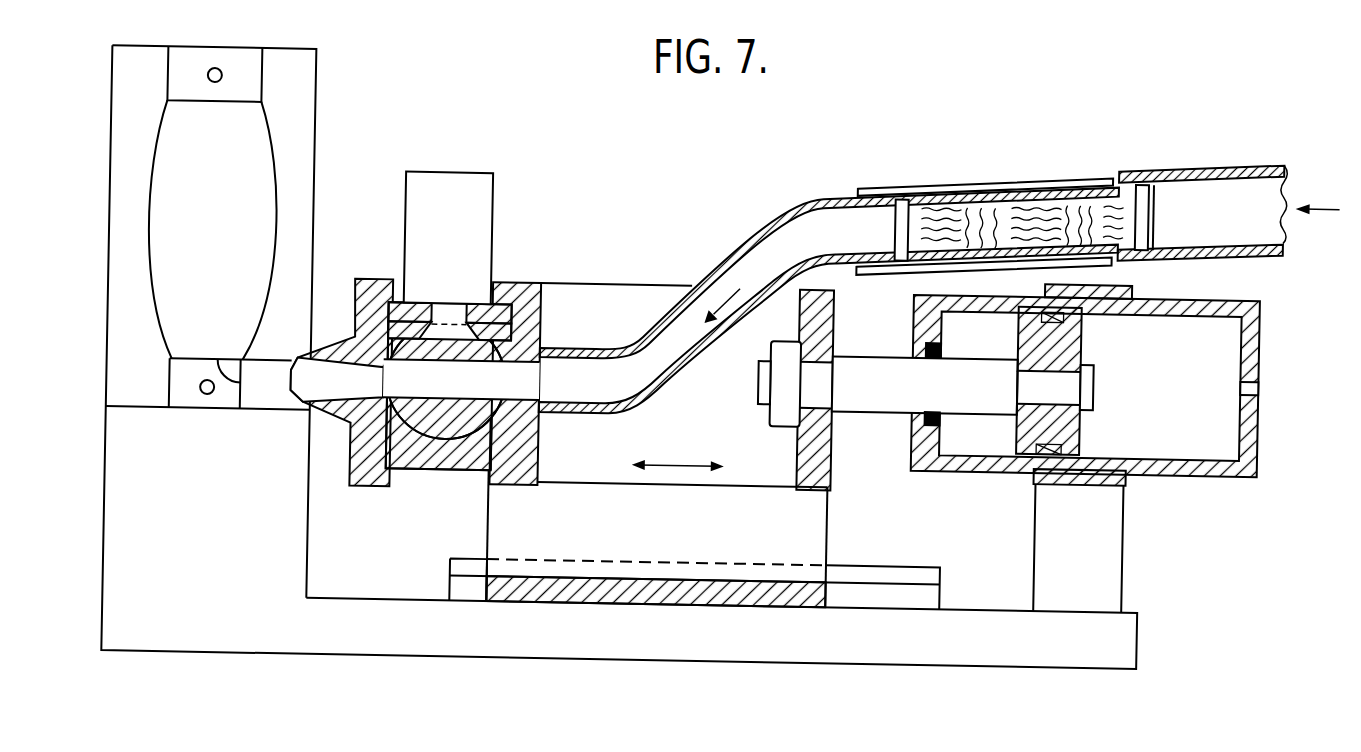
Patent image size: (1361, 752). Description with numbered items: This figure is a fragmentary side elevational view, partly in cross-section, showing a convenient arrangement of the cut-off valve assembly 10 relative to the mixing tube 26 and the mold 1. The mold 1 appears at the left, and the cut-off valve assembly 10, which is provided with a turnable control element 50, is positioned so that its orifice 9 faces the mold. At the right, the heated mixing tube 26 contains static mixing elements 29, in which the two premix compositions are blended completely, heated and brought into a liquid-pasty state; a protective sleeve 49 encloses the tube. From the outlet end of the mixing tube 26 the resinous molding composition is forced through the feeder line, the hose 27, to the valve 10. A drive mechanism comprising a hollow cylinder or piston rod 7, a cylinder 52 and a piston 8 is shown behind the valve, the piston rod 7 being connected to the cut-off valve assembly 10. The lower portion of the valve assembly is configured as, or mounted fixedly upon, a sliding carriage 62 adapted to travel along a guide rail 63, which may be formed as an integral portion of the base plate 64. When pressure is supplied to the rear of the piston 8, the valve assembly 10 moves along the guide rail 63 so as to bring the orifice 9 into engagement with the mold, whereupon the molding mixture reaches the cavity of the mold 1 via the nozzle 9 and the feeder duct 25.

The mold 1 is at (294, 200).
The feeder duct 25 is at (268, 383).
The orifice 9 is at (336, 412).
The cut-off valve assembly 10 is at (650, 288).
The turnable control element 50 is at (475, 214).
The hose 27 is at (815, 196).
The heater sleeve 49 is at (950, 180).
The static mixing elements 29 is at (1008, 208).
The mixing tube 26 is at (1067, 185).
The piston rod 7 is at (862, 392).
The piston 8 is at (1065, 418).
The cylinder 52 is at (1180, 461).
The sliding carriage 62 is at (805, 524).
The guide rail 63 is at (890, 574).
The base plate 64 is at (852, 649).